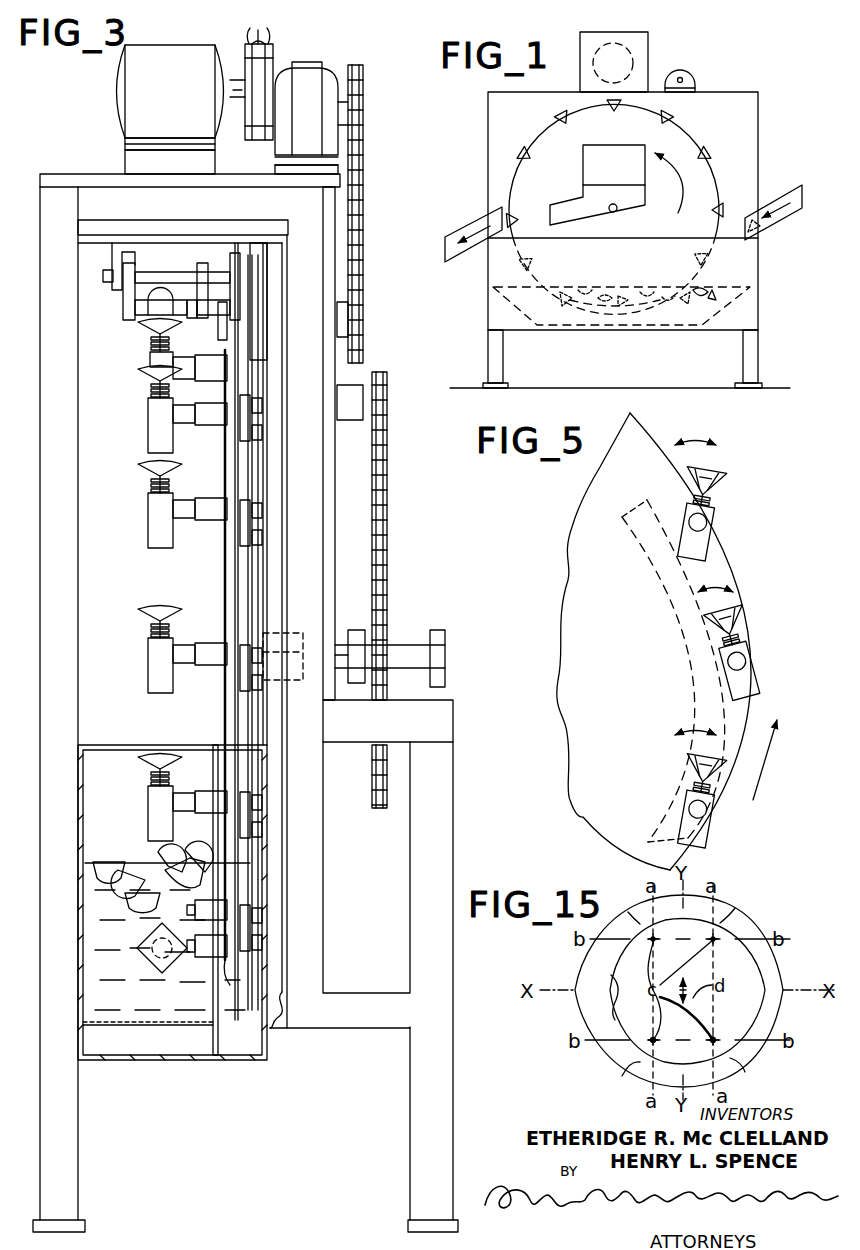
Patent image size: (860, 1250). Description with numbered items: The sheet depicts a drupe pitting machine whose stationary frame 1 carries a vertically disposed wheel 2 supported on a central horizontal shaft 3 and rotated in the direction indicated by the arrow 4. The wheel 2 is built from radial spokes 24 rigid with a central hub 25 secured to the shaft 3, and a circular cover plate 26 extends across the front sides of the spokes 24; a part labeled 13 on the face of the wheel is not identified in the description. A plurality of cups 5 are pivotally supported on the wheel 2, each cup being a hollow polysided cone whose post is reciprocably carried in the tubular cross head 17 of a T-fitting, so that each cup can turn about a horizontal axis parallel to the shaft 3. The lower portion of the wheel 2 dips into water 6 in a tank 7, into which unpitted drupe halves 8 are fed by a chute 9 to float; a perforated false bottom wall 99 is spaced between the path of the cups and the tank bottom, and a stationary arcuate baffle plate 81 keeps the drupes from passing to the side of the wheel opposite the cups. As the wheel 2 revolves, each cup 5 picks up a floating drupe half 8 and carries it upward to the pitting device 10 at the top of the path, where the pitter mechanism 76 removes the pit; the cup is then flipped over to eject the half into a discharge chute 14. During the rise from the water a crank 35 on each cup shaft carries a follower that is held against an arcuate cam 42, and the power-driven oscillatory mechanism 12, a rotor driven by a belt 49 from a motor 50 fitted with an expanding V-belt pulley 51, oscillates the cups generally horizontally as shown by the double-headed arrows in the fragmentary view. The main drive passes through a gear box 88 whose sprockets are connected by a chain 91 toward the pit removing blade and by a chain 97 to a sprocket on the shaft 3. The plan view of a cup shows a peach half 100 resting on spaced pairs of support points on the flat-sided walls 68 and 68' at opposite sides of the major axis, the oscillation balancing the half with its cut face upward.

In FIG. 1, the frame 1 is at (761, 142).
In FIG. 1, the wheel 2 is at (696, 140).
In FIG. 5, the wheel 2 is at (750, 620).
In FIG. 3, the central horizontal shaft 3 is at (413, 648).
In FIG. 1, the central horizontal shaft 3 is at (613, 213).
In FIG. 1, the arrow 4 is at (669, 192).
In FIG. 3, the cup 5 is at (136, 612).
In FIG. 1, the cup 5 is at (716, 208).
In FIG. 5, the cup 5 is at (731, 480).
In FIG. 15, the cup 5 is at (748, 929).
In FIG. 3, the water 6 is at (98, 932).
In FIG. 1, the water 6 is at (625, 286).
In FIG. 3, the tank 7 is at (268, 1037).
In FIG. 1, the tank 7 is at (752, 295).
In FIG. 3, the unpitted drupe half 8 is at (113, 862).
In FIG. 1, the unpitted drupe half 8 is at (753, 215).
In FIG. 1, the chute 9 is at (782, 216).
In FIG. 1, the pitting device 10 is at (650, 55).
In FIG. 1, the power-driven oscillatory mechanism 12 is at (705, 75).
In FIG. 1, the access door 13 is at (616, 157).
In FIG. 1, the discharge chute 14 is at (470, 250).
In FIG. 3, the tubular cross head 17 is at (149, 812).
In FIG. 3, the spokes 24 is at (224, 570).
In FIG. 3, the central hub 25 is at (295, 681).
In FIG. 3, the circular cover plate 26 is at (234, 592).
In FIG. 3, the crank 35 is at (258, 527).
In FIG. 3, the cam 42 is at (259, 595).
In FIG. 5, the cam 42 is at (692, 667).
In FIG. 3, the belt 49 is at (260, 44).
In FIG. 3, the motor 50 is at (190, 89).
In FIG. 3, the expanding V-belt pulley 51 is at (270, 46).
In FIG. 15, the walls 68 is at (684, 1077).
In FIG. 15, the walls 68' is at (684, 907).
In FIG. 3, the pitter mechanism 76 is at (130, 327).
In FIG. 3, the baffle plate 81 is at (219, 1015).
In FIG. 3, the gear box 88 is at (318, 102).
In FIG. 3, the chain 91 is at (365, 228).
In FIG. 3, the chain 97 is at (387, 462).
In FIG. 3, the perforated false bottom wall 99 is at (156, 1028).
In FIG. 15, the peach half 100 is at (606, 1014).